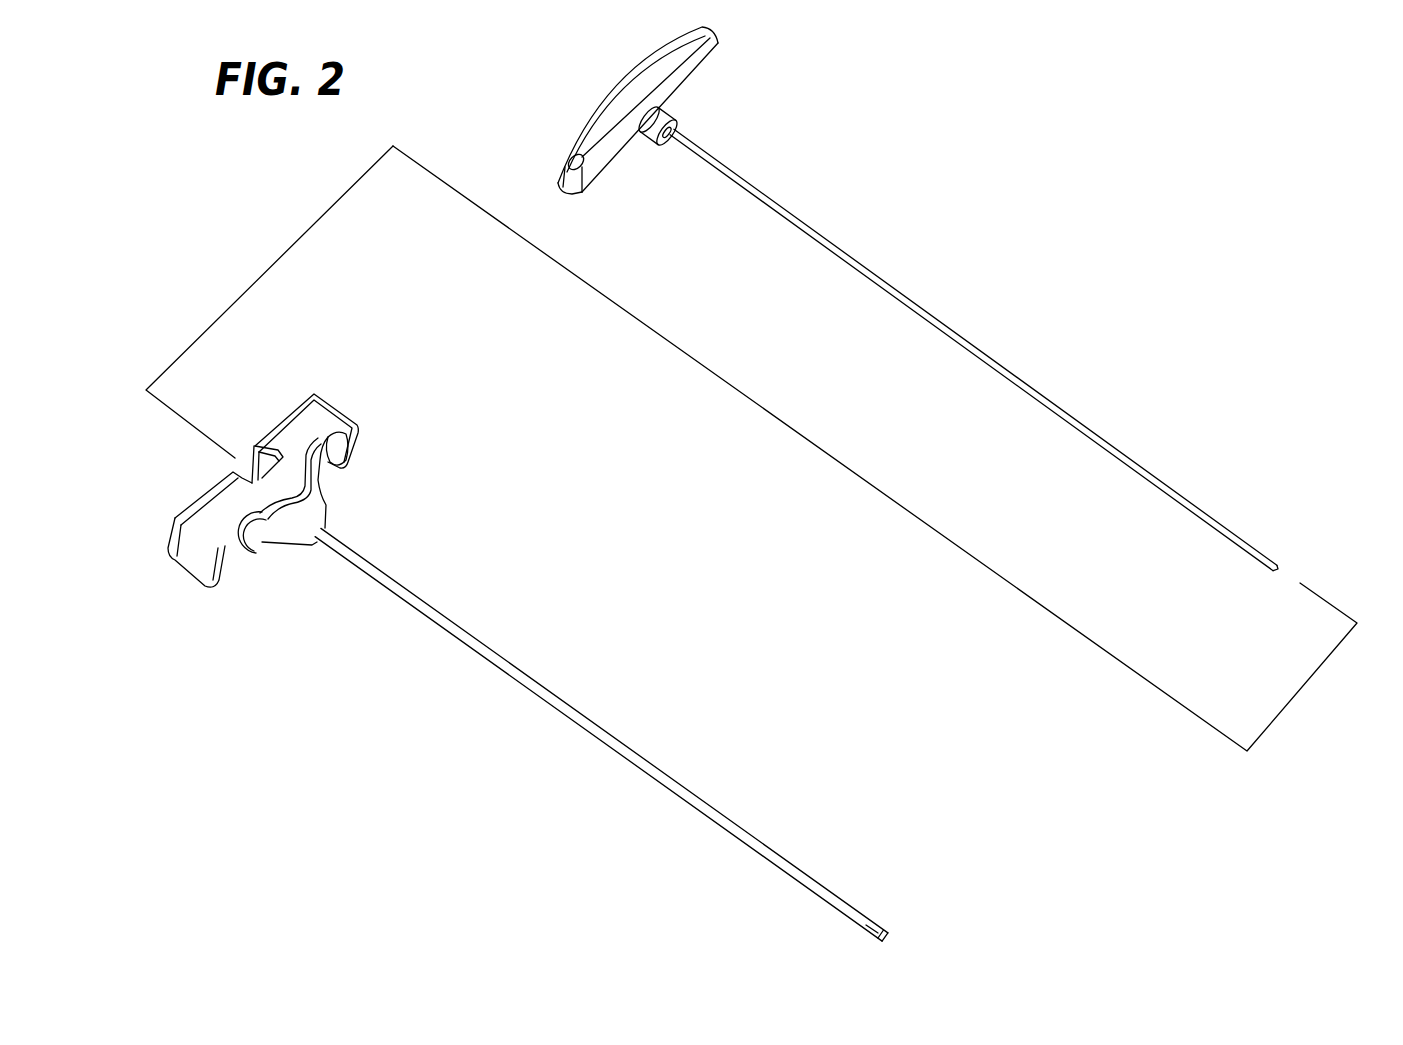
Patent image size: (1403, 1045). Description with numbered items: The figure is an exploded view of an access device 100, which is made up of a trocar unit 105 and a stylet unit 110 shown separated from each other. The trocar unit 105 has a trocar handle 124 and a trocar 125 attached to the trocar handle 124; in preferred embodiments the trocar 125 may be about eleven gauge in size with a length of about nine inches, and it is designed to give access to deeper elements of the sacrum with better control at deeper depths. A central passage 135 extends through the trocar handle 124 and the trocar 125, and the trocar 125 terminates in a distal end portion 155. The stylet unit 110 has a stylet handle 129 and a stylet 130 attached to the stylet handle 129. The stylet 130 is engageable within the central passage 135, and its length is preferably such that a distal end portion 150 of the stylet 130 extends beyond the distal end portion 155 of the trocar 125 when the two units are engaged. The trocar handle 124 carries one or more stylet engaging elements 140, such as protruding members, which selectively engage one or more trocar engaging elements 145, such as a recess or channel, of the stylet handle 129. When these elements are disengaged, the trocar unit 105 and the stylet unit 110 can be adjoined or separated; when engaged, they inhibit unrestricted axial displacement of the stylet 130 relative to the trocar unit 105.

The access device 100 is at (1046, 165).
The trocar unit 105 is at (190, 574).
The stylet unit 110 is at (612, 170).
The trocar handle 124 is at (320, 415).
The trocar 125 is at (565, 702).
The stylet handle 129 is at (702, 70).
The stylet 130 is at (975, 346).
The central passage 135 is at (889, 940).
The stylet engaging element 140 is at (251, 482).
The trocar engaging element 145 is at (665, 110).
The distal end portion of the stylet 150 is at (1277, 566).
The distal end portion of the trocar 155 is at (870, 923).